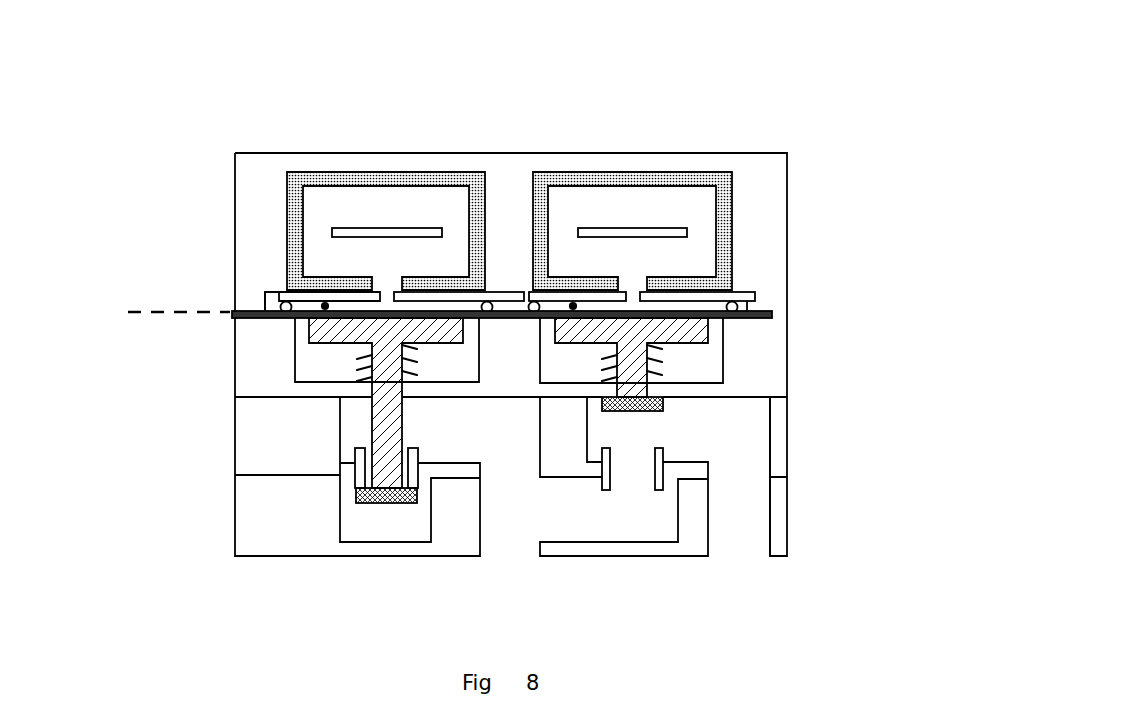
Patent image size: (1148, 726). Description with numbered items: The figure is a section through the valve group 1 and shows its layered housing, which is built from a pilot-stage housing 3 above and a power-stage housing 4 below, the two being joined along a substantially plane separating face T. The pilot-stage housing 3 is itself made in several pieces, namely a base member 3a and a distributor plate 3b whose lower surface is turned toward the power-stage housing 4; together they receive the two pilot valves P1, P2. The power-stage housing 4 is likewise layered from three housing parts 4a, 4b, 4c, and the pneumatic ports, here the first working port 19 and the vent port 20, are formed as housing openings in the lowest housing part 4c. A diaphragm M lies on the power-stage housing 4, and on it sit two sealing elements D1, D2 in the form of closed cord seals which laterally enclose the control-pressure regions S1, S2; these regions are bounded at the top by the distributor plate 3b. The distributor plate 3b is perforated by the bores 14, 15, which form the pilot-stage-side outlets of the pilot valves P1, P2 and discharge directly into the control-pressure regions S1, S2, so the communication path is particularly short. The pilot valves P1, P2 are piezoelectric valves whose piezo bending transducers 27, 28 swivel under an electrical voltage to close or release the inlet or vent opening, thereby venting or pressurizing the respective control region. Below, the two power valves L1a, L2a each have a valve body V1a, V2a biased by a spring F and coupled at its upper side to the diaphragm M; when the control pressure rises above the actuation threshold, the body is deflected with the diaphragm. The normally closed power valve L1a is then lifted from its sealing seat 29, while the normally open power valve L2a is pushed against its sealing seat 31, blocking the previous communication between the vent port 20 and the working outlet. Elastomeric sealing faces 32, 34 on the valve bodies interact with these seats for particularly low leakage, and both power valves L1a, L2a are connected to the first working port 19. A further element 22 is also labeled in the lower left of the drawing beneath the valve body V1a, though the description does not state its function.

The valve group 1 is at (769, 107).
The pilot-stage housing 3 is at (232, 153).
The base member 3a is at (773, 228).
The distributor plate 3b is at (265, 310).
The power-stage housing 4 is at (231, 318).
The housing part 4a is at (770, 350).
The housing part 4b is at (778, 427).
The lowest housing part 4c is at (778, 508).
The bore 14 is at (381, 298).
The bore 15 is at (633, 297).
The first working port 19 is at (505, 544).
The vent port 20 is at (738, 549).
The cavity 22 is at (353, 523).
The piezo bending transducer 27 is at (430, 228).
The piezo bending transducer 28 is at (665, 230).
The sealing seat 29 is at (413, 488).
The sealing seat 31 is at (605, 443).
The sealing face 32 is at (405, 496).
The sealing face 34 is at (653, 405).
The sealing element D1 is at (285, 302).
The sealing element D2 is at (532, 301).
The pilot valve P1 is at (368, 207).
The pilot valve P2 is at (628, 214).
The control-pressure region S1 is at (325, 305).
The control-pressure region S2 is at (573, 305).
The diaphragm M is at (768, 316).
The separating face T is at (157, 311).
The valve body V1a is at (383, 410).
The valve body V2a is at (688, 338).
The spring F is at (357, 368).
The power valve L1a is at (387, 507).
The power valve L2a is at (633, 415).